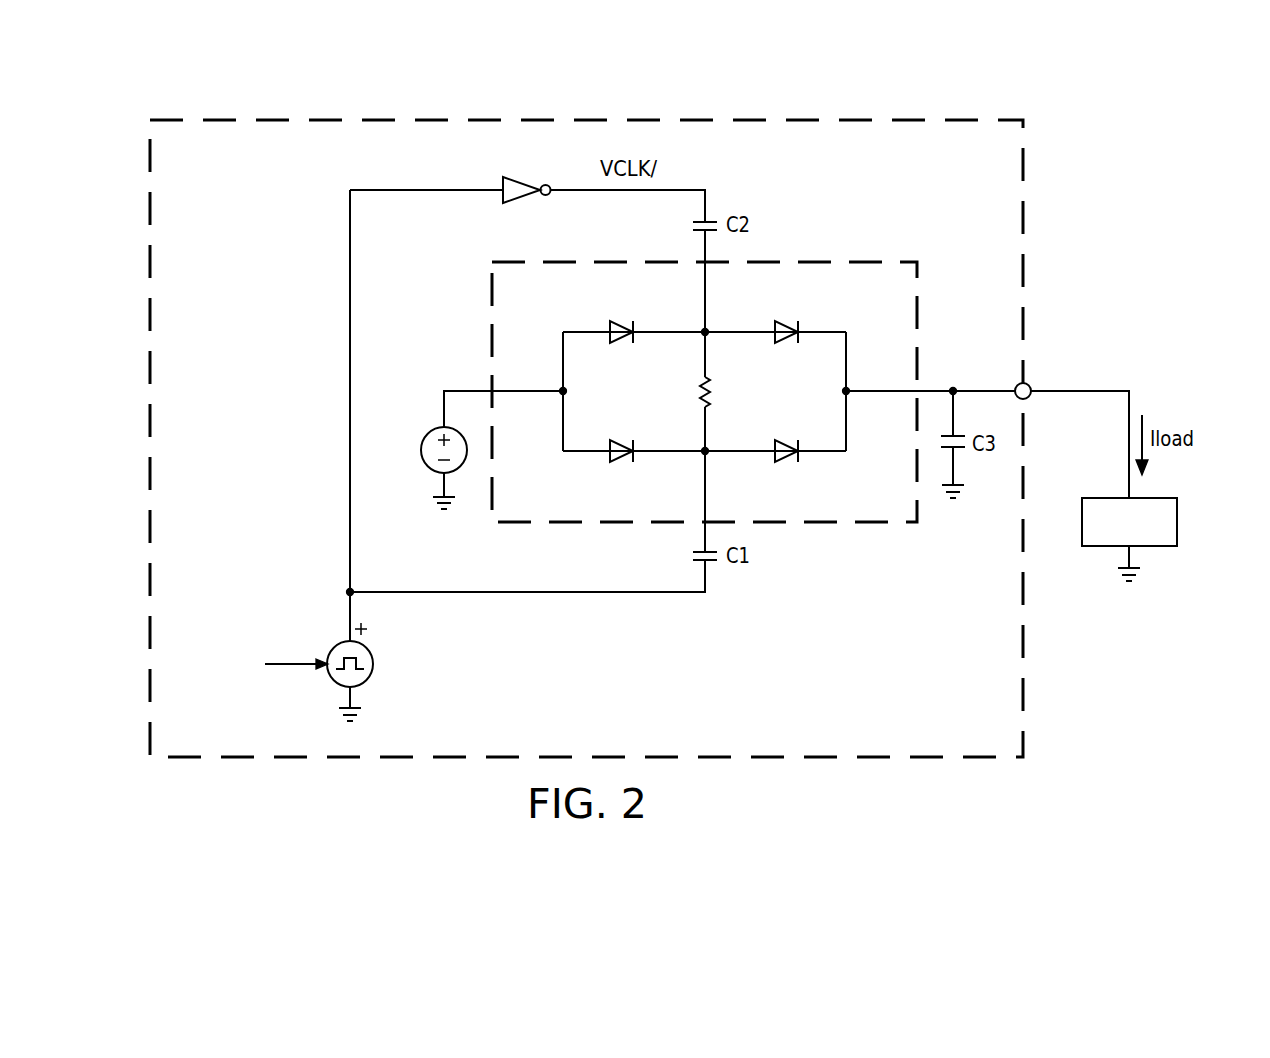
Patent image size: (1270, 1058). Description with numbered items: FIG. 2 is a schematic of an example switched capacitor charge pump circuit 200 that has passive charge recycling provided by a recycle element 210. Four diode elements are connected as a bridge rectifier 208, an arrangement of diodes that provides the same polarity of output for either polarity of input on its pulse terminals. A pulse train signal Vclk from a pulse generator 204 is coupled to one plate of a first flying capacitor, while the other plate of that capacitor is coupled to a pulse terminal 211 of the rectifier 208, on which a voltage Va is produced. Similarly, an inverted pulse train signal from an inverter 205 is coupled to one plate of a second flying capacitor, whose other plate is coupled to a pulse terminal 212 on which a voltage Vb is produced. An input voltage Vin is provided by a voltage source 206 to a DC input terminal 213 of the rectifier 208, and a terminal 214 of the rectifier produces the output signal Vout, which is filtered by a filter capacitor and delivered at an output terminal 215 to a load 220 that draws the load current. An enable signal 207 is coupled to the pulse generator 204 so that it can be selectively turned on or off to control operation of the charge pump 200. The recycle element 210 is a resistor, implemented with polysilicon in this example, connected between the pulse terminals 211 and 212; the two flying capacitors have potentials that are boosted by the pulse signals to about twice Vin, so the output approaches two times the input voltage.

The switched capacitor charge pump circuit 200 is at (437, 112).
The pulse generator 204 is at (364, 683).
The inverter 205 is at (528, 197).
The voltage source 206 is at (428, 468).
The enable signal 207 is at (292, 666).
The bridge rectifier 208 is at (838, 252).
The recycle element 210 is at (700, 394).
The pulse terminal 211 is at (710, 455).
The pulse terminal 212 is at (738, 313).
The DC input terminal 213 is at (558, 388).
The terminal 214 is at (880, 370).
The output terminal 215 is at (1030, 398).
The load 220 is at (1177, 522).